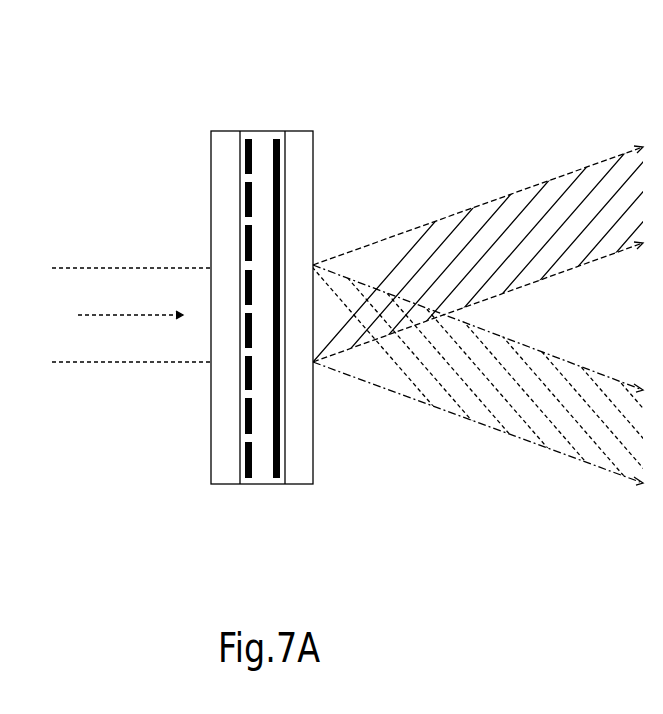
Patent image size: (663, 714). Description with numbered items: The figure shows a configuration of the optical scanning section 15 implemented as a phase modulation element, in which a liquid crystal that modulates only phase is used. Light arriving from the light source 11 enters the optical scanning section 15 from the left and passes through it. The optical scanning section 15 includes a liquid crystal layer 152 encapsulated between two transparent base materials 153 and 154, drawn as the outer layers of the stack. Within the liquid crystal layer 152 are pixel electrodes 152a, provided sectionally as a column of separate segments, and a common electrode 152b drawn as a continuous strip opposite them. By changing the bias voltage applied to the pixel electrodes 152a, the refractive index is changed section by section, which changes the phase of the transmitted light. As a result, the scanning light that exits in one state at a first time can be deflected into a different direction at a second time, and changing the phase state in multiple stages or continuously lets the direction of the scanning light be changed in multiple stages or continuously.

The light source 11 is at (113, 282).
The optical scanning section 15 is at (262, 127).
The liquid crystal layer 152 is at (265, 353).
The pixel electrodes 152a is at (248, 482).
The common electrode 152b is at (280, 483).
The transparent base material 153 is at (226, 140).
The transparent base material 154 is at (302, 140).